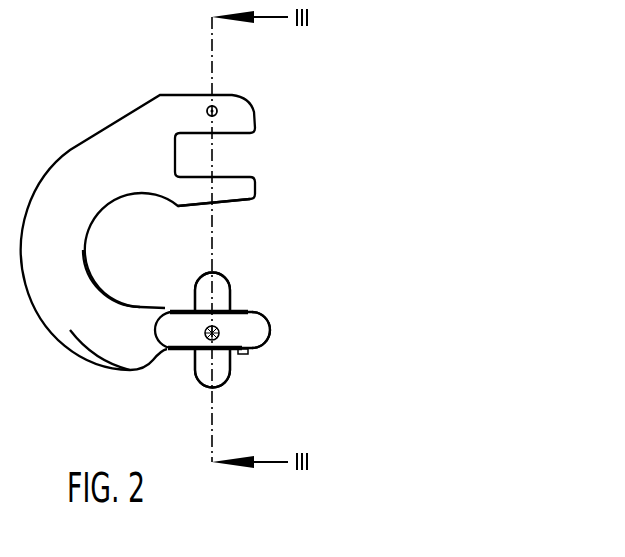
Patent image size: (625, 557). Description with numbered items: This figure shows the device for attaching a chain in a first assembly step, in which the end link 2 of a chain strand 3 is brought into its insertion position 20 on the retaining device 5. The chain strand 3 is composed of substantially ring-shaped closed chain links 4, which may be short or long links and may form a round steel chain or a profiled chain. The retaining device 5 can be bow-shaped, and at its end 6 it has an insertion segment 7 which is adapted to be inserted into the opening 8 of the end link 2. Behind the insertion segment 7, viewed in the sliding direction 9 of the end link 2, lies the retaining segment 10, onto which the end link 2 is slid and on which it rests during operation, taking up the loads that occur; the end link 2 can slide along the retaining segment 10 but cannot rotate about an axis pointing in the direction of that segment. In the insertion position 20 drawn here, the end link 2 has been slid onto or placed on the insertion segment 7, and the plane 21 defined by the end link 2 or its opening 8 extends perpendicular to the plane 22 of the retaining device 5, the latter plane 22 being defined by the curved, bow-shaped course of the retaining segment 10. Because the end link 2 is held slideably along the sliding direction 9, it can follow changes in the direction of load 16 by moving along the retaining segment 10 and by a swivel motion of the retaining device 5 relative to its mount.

The retaining device 5 is at (75, 98).
The plane of the retaining device 22 is at (133, 237).
The retaining segment 10 is at (108, 274).
The plane defined by the end link 21 is at (207, 257).
The sliding direction 9 is at (205, 333).
The insertion position 20 is at (232, 265).
The end link 2 is at (221, 290).
The chain strand 3 is at (263, 358).
The chain links 4 is at (262, 323).
The insertion segment 7 is at (253, 303).
The end 6 is at (272, 343).
The opening 8 is at (190, 353).
The direction of load 16 is at (219, 333).